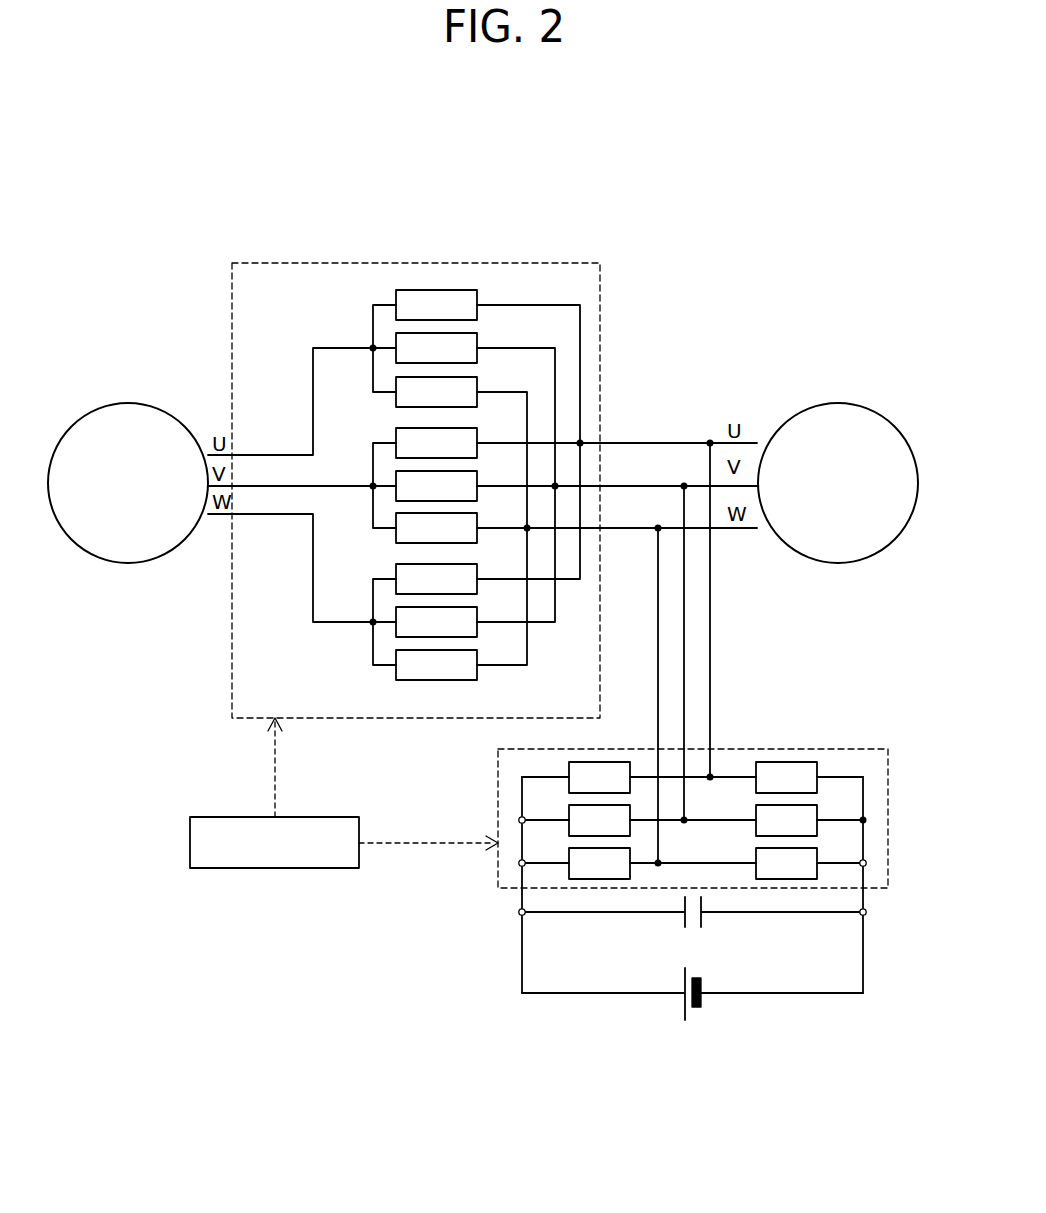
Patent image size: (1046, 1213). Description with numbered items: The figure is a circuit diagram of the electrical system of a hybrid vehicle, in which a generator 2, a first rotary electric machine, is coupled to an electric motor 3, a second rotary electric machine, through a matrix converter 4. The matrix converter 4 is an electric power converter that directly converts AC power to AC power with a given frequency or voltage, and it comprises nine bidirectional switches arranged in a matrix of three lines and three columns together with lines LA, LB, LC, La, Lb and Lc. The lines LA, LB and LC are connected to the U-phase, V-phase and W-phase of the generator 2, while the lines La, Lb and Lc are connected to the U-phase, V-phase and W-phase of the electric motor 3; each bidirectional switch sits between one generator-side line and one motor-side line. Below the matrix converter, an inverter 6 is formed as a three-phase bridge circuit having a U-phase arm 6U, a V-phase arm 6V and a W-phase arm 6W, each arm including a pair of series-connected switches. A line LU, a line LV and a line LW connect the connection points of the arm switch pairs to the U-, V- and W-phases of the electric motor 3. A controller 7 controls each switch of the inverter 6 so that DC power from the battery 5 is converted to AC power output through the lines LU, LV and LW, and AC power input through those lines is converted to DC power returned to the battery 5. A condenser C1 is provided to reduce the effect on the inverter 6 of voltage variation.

The generator 2 is at (103, 562).
The electric motor 3 is at (858, 558).
The matrix converter 4 is at (576, 263).
The battery 5 is at (712, 1007).
The inverter 6 is at (498, 872).
The U-phase arm 6U is at (840, 777).
The V-phase arm 6V is at (846, 820).
The W-phase arm 6W is at (846, 863).
The controller 7 is at (245, 868).
The condenser C1 is at (701, 917).
The line LA is at (266, 454).
The line LB is at (293, 485).
The line LC is at (266, 514).
The line La is at (647, 444).
The line Lb is at (668, 486).
The line Lc is at (745, 530).
The line LU is at (712, 645).
The line LV is at (685, 681).
The line LW is at (660, 718).